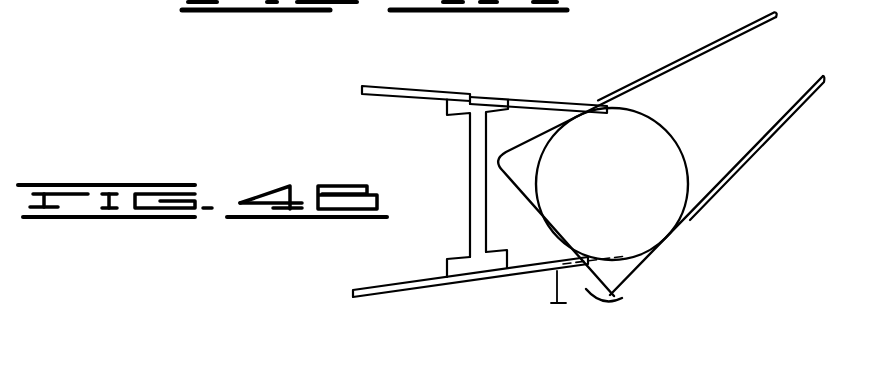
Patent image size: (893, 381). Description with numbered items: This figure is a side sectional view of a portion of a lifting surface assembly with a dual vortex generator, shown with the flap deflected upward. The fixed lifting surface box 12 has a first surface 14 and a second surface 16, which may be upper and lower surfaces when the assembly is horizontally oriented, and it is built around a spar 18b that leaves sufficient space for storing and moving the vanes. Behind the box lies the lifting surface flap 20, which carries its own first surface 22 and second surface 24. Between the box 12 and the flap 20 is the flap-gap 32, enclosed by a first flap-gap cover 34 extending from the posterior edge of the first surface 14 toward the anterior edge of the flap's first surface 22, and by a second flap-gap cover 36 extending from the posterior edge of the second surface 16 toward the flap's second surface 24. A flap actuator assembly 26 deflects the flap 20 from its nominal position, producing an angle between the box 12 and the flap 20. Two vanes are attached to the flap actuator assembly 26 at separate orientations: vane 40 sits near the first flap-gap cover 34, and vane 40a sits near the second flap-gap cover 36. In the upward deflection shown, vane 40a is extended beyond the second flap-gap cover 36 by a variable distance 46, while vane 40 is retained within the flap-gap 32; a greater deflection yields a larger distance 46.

The lifting surface box 12 is at (426, 80).
The first surface 14 is at (390, 86).
The second surface 16 is at (403, 283).
The spar 18b is at (469, 173).
The lifting surface flap 20 is at (730, 204).
The first surface of the lifting surface flap 22 is at (713, 43).
The second surface of the lifting surface flap 24 is at (772, 139).
The flap actuator assembly 26 is at (633, 157).
The flap-gap 32 is at (540, 253).
The first flap-gap cover 34 is at (510, 100).
The second flap-gap cover 36 is at (503, 276).
The vane 40 is at (522, 153).
The vane 40a is at (620, 299).
The distance 46 is at (560, 283).